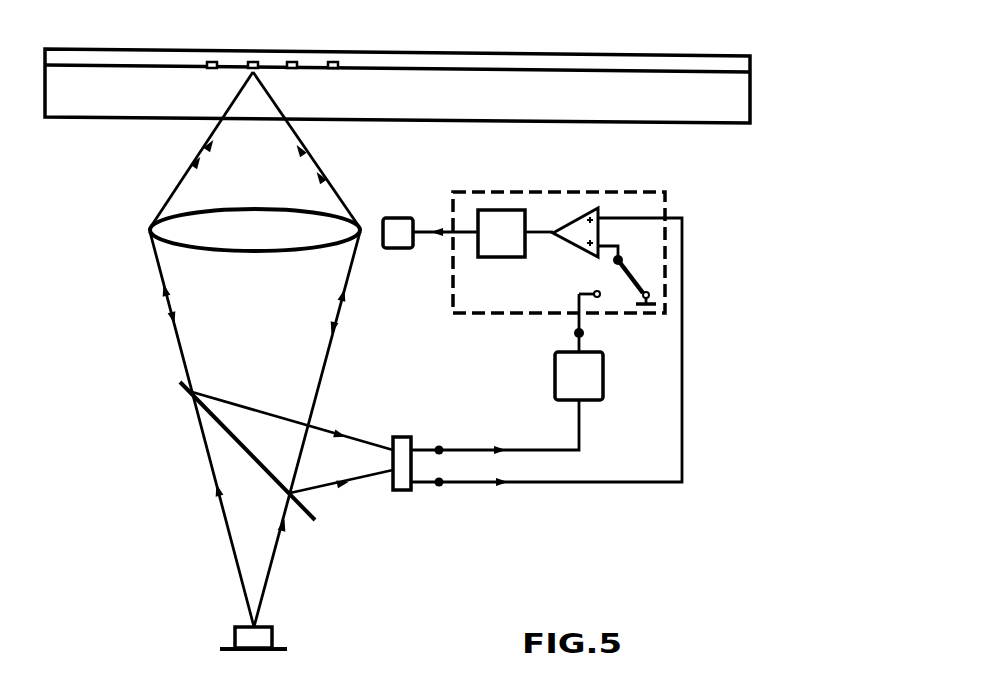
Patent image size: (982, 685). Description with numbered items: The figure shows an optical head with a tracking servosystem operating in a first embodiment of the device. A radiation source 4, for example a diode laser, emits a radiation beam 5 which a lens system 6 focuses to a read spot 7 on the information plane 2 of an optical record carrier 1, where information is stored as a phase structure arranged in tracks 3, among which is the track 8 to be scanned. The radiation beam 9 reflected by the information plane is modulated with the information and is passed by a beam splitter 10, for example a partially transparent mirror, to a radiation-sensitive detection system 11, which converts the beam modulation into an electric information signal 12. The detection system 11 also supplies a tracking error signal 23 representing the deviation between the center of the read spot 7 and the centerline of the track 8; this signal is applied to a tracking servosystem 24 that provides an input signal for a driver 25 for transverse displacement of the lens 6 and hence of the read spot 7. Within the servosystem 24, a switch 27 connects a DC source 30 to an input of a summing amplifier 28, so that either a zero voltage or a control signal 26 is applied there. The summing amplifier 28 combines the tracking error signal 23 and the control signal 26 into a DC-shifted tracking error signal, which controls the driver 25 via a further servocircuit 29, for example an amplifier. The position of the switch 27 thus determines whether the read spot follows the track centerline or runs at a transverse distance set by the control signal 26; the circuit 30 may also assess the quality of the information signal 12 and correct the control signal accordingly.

The optical record carrier 1 is at (762, 33).
The information plane 2 is at (669, 72).
The tracks 3 is at (333, 58).
The radiation source 4 is at (272, 637).
The radiation beam 5 is at (228, 533).
The lens system 6 is at (185, 235).
The read spot 7 is at (258, 75).
The track to be scanned 8 is at (255, 58).
The reflected radiation beam 9 is at (312, 163).
The beam splitter 10 is at (183, 392).
The radiation-sensitive detection system 11 is at (401, 445).
The electric information signal 12 is at (440, 447).
The tracking error signal 23 is at (439, 486).
The tracking servosystem 24 is at (610, 190).
The driver 25 is at (398, 218).
The control signal 26 is at (575, 333).
The switch 27 is at (626, 277).
The summing amplifier 28 is at (578, 214).
The further servocircuit 29 is at (508, 260).
The DC source 30 is at (555, 373).